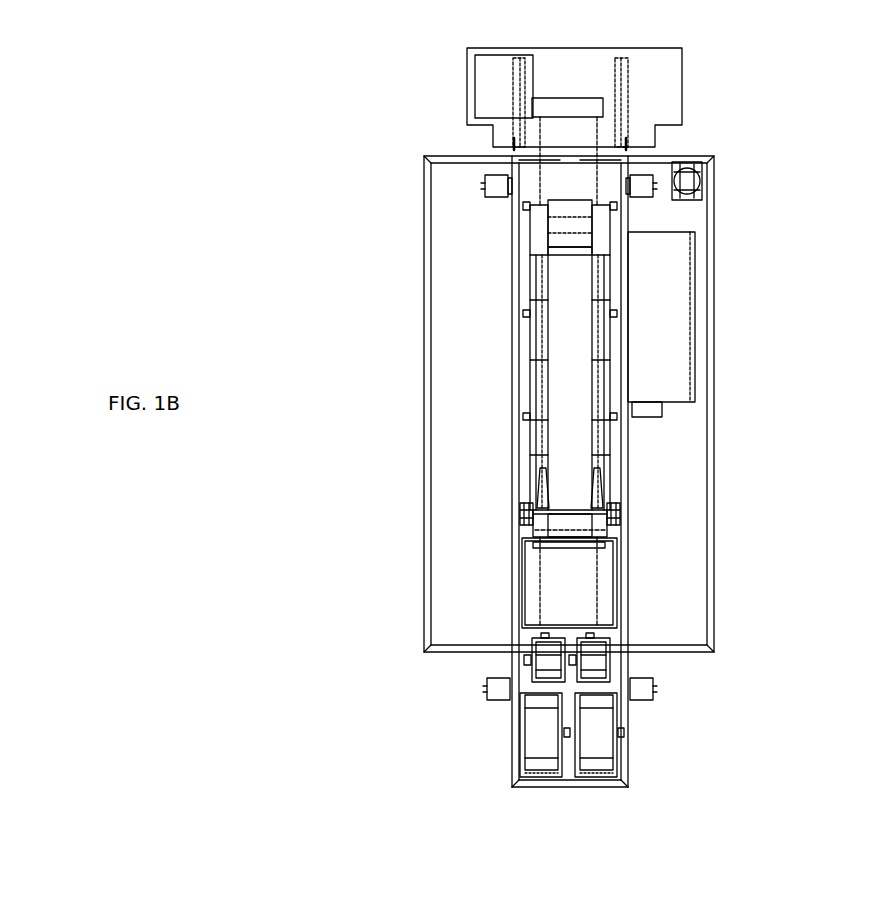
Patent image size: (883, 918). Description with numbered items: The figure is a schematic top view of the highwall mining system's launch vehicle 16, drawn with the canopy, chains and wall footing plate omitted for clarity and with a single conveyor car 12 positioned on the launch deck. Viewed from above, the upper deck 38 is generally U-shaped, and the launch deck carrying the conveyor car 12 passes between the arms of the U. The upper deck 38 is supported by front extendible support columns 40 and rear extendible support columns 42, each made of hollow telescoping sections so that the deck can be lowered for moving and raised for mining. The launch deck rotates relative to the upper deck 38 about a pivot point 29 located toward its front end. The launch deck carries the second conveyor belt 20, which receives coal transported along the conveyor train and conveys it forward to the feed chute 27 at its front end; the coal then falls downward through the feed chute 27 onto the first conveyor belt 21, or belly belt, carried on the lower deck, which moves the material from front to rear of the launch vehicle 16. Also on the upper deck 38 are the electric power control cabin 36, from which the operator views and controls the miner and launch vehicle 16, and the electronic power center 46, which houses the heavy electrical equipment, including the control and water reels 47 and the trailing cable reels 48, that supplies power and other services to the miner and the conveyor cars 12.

The launch vehicle 16 is at (810, 111).
The electric power control cabin 36 is at (475, 73).
The rear extendible support columns 42 is at (485, 177).
The first conveyor belt 21 is at (597, 173).
The conveyor car 12 is at (607, 365).
The electronic power center 46 is at (697, 365).
The upper deck 38 is at (427, 510).
The pivot point 29 is at (618, 513).
The feed chute 27 is at (618, 555).
The second conveyor belt 20 is at (552, 520).
The control and water reels 47 is at (613, 670).
The front extendible support columns 40 is at (655, 697).
The trailing cable reels 48 is at (622, 745).